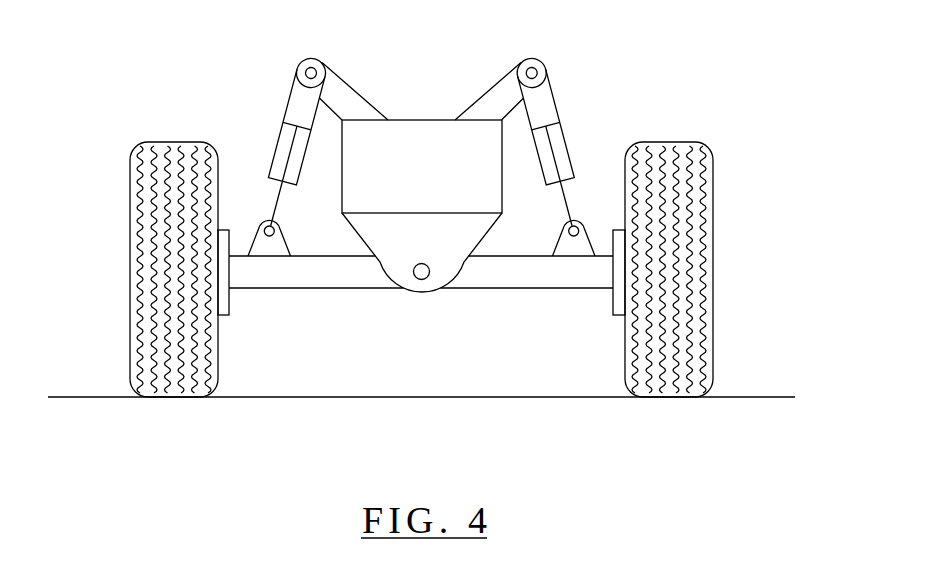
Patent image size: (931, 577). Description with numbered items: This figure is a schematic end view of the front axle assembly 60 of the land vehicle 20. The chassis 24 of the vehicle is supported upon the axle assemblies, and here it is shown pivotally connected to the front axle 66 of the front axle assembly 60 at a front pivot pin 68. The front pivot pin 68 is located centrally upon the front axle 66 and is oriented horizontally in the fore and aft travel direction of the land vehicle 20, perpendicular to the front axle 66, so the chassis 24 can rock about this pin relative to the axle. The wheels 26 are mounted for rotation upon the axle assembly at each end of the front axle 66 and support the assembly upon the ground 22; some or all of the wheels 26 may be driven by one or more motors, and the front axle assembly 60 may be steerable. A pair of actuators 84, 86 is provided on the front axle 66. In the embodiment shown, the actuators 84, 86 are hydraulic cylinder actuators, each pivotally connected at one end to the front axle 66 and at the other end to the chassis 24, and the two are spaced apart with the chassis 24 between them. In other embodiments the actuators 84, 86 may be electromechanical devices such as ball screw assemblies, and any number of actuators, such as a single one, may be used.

The land vehicle 20 is at (775, 83).
The ground 22 is at (755, 393).
The chassis 24 is at (413, 142).
The wheels 26 is at (420, 269).
The front axle assembly 60 is at (714, 207).
The front axle 66 is at (290, 277).
The front pivot pin 68 is at (422, 280).
The actuator 84 is at (283, 116).
The actuator 86 is at (560, 116).